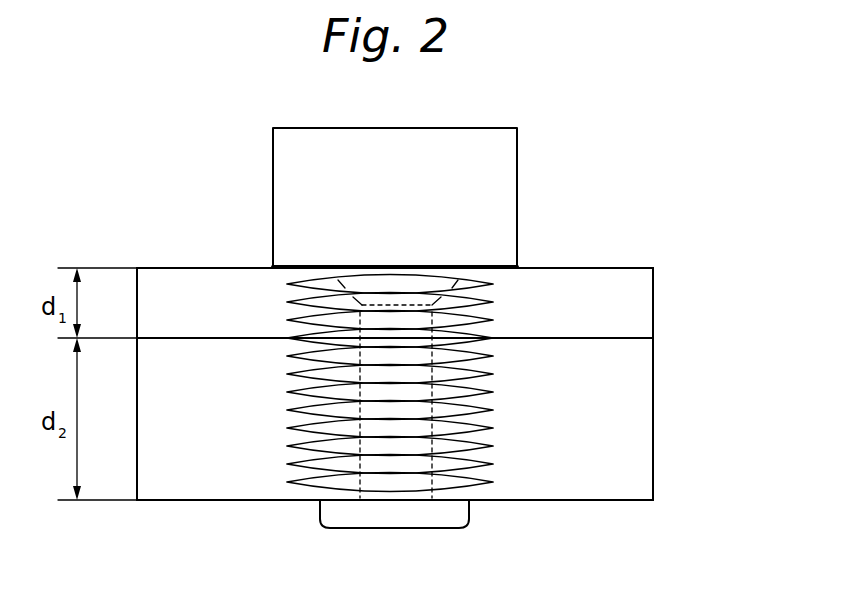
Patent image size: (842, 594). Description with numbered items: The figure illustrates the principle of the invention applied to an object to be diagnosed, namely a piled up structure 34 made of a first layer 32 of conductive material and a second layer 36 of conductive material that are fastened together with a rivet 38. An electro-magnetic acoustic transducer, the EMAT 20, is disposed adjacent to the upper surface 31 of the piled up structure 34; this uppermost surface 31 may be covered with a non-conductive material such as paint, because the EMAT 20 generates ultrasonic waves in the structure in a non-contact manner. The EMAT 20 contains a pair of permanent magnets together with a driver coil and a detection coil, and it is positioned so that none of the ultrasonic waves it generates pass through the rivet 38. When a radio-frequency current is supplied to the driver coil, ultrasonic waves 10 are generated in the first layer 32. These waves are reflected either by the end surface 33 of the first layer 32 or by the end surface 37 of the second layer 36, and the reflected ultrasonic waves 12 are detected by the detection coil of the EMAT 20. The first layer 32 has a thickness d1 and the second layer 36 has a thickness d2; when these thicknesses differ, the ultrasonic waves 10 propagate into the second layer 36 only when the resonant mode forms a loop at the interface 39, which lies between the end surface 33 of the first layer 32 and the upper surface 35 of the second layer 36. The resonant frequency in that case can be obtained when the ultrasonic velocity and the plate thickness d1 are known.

The ultrasonic waves 10 is at (310, 364).
The reflected ultrasonic waves 12 is at (292, 300).
The electro-magnetic acoustic transducer 20 is at (500, 172).
The upper surface 31 is at (600, 266).
The first layer 32 is at (620, 289).
The end surface of the first layer 33 is at (600, 338).
The piled up structure 34 is at (740, 275).
The upper surface of the second layer 35 is at (558, 338).
The second layer 36 is at (622, 425).
The end surface of the second layer 37 is at (607, 499).
The rivet 38 is at (425, 517).
The interface 39 is at (212, 345).